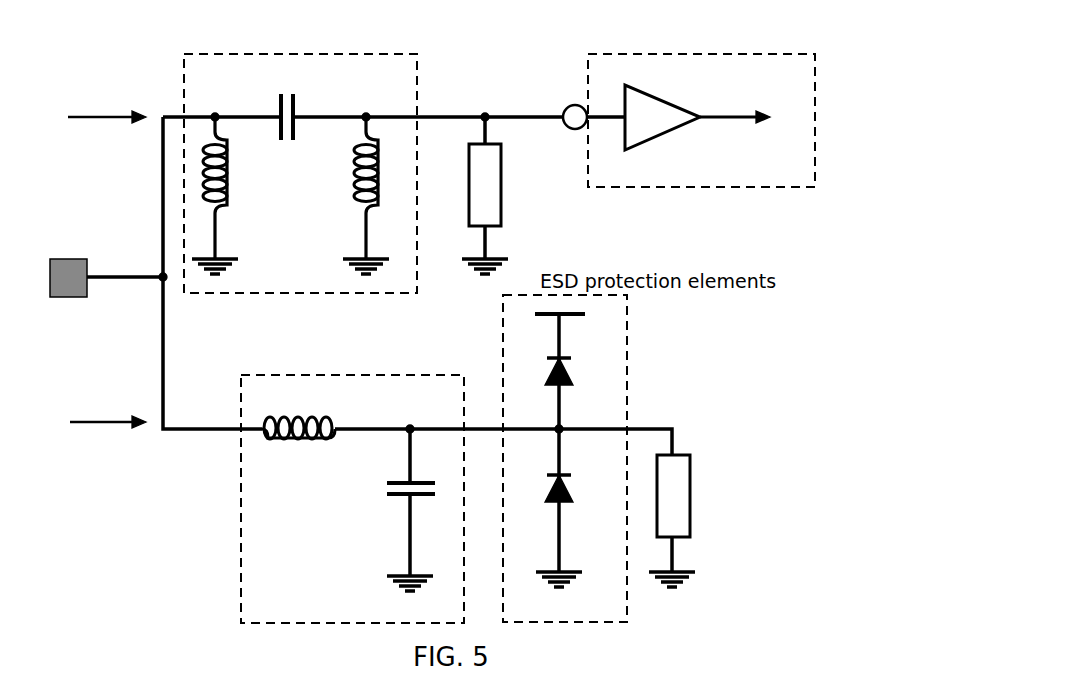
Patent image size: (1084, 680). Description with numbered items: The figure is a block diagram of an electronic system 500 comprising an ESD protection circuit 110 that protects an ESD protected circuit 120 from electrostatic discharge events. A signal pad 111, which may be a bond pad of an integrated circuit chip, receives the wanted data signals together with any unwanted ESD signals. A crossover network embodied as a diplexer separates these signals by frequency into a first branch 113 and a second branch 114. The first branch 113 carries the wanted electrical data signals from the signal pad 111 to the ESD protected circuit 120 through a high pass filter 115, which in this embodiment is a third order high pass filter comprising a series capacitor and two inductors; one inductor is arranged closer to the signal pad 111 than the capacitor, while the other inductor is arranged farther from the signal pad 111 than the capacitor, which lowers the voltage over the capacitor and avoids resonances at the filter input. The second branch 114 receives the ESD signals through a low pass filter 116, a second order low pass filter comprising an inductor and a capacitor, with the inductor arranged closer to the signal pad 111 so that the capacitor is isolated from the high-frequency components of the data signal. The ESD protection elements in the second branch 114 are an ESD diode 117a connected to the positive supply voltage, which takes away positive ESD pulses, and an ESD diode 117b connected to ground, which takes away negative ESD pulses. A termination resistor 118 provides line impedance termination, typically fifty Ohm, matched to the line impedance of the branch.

The ESD protection circuit 110 is at (118, 56).
The signal pad 111 is at (75, 280).
The first branch 113 is at (103, 114).
The second branch 114 is at (107, 406).
The high pass filter 115 is at (420, 70).
The low pass filter 116 is at (405, 375).
The ESD diode 117a is at (580, 376).
The ESD diode 117b is at (580, 508).
The termination resistor 118 is at (693, 485).
The ESD protected circuit 120 is at (815, 163).
The electronic system 500 is at (884, 658).